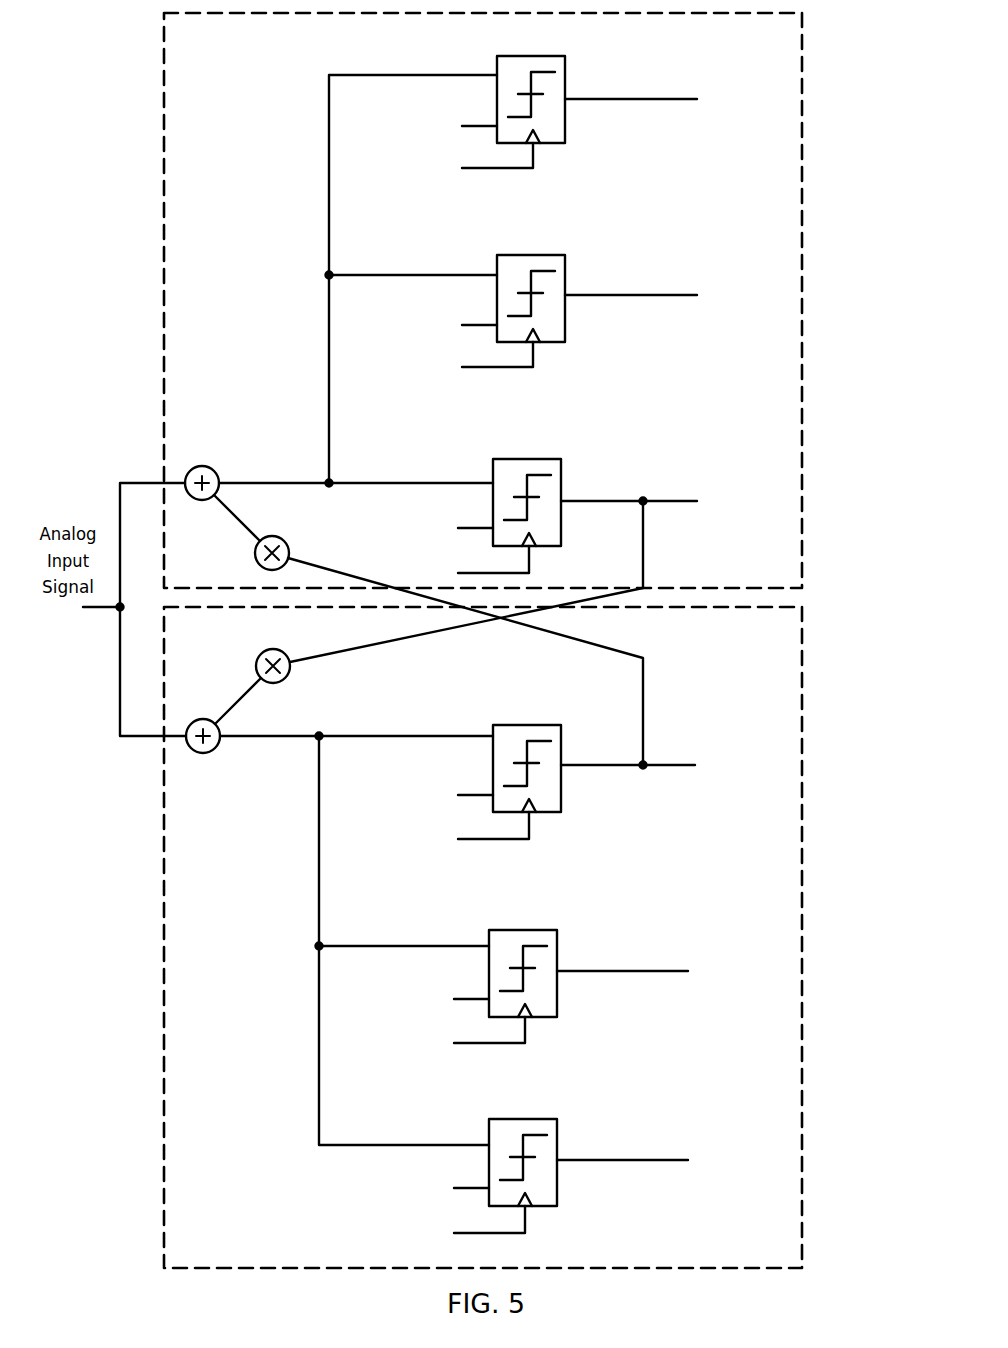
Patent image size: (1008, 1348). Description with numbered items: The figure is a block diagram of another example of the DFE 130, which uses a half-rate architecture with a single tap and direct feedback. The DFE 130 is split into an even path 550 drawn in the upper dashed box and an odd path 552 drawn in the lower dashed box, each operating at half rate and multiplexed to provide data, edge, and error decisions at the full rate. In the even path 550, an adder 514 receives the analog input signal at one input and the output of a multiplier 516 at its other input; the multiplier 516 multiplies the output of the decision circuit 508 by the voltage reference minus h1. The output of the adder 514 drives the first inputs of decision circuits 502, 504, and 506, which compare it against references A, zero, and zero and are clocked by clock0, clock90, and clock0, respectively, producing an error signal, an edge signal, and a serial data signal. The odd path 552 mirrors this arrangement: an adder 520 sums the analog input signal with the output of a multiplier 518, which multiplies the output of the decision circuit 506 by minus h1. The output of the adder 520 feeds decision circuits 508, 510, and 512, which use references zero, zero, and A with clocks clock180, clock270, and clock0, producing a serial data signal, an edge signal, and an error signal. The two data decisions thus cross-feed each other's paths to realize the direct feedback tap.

The DFE 130 is at (135, 58).
The decision circuit 502 is at (530, 56).
The decision circuit 504 is at (530, 255).
The decision circuit 506 is at (527, 459).
The decision circuit 508 is at (523, 725).
The decision circuit 510 is at (520, 930).
The decision circuit 512 is at (520, 1119).
The adder 514 is at (205, 466).
The multiplier 516 is at (274, 536).
The multiplier 518 is at (275, 683).
The adder 520 is at (207, 753).
The even path 550 is at (802, 172).
The odd path 552 is at (802, 694).